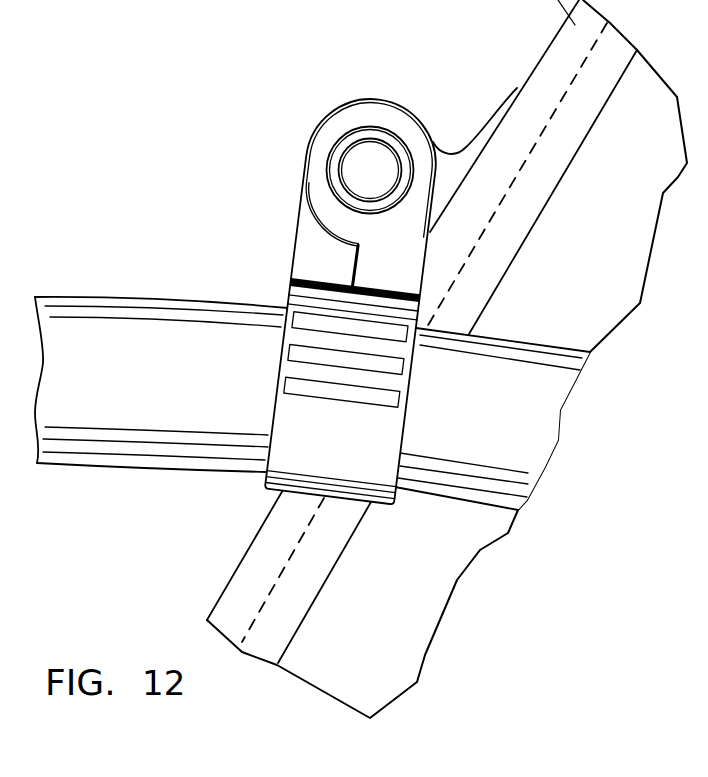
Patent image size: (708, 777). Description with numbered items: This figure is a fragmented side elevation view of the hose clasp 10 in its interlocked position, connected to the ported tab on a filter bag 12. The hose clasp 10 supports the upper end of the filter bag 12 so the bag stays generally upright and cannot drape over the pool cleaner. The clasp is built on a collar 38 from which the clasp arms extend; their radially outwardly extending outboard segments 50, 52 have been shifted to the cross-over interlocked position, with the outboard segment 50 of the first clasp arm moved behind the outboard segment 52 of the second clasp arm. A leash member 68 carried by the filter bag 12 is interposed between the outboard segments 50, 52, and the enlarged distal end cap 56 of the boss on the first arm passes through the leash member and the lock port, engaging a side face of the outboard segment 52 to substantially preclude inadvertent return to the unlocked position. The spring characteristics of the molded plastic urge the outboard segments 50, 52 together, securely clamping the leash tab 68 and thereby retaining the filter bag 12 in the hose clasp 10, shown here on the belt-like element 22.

The hose clasp 10 is at (328, 299).
The filter bag 12 is at (447, 359).
The belt 22 is at (312, 375).
The collar 38 is at (378, 430).
The outboard segment of first clasp arm 50 is at (330, 298).
The outboard segment of second clasp arm 52 is at (363, 132).
The enlarged distal end cap 56 is at (328, 141).
The leash member 68 is at (453, 160).